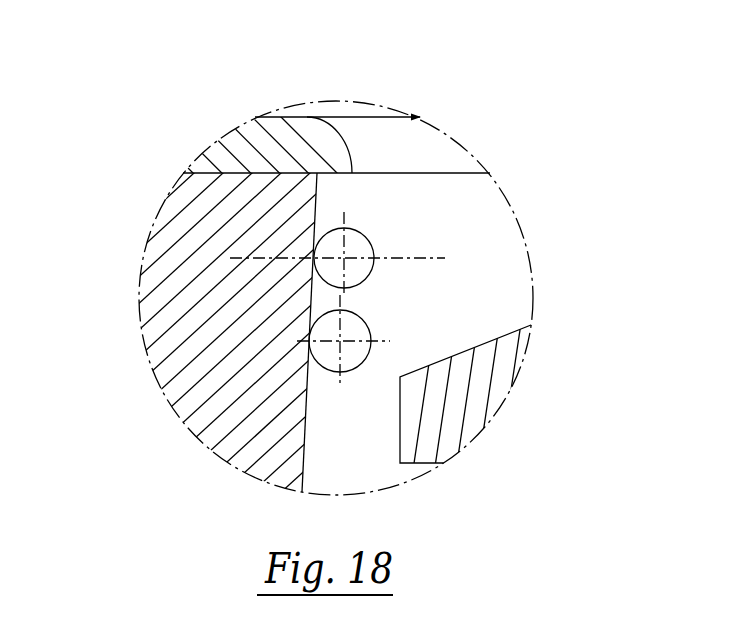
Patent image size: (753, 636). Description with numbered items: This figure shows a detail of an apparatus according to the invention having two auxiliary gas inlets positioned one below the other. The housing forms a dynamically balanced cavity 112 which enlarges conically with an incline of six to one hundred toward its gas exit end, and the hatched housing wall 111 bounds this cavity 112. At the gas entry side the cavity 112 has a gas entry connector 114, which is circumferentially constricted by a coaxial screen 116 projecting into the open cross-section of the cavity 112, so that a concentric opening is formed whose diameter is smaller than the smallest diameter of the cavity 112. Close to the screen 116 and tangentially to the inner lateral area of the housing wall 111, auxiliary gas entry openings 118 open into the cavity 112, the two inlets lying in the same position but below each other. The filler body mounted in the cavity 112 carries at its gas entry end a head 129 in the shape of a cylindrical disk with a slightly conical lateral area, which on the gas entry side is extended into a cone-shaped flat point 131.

The body / housing section 111 is at (172, 243).
The cavity 112 is at (340, 453).
The gas entry connector 114 is at (418, 143).
The coaxial screen 116 is at (262, 147).
The auxiliary gas entry opening 118 is at (363, 243).
The head 129 is at (400, 415).
The flat point 131 is at (478, 340).